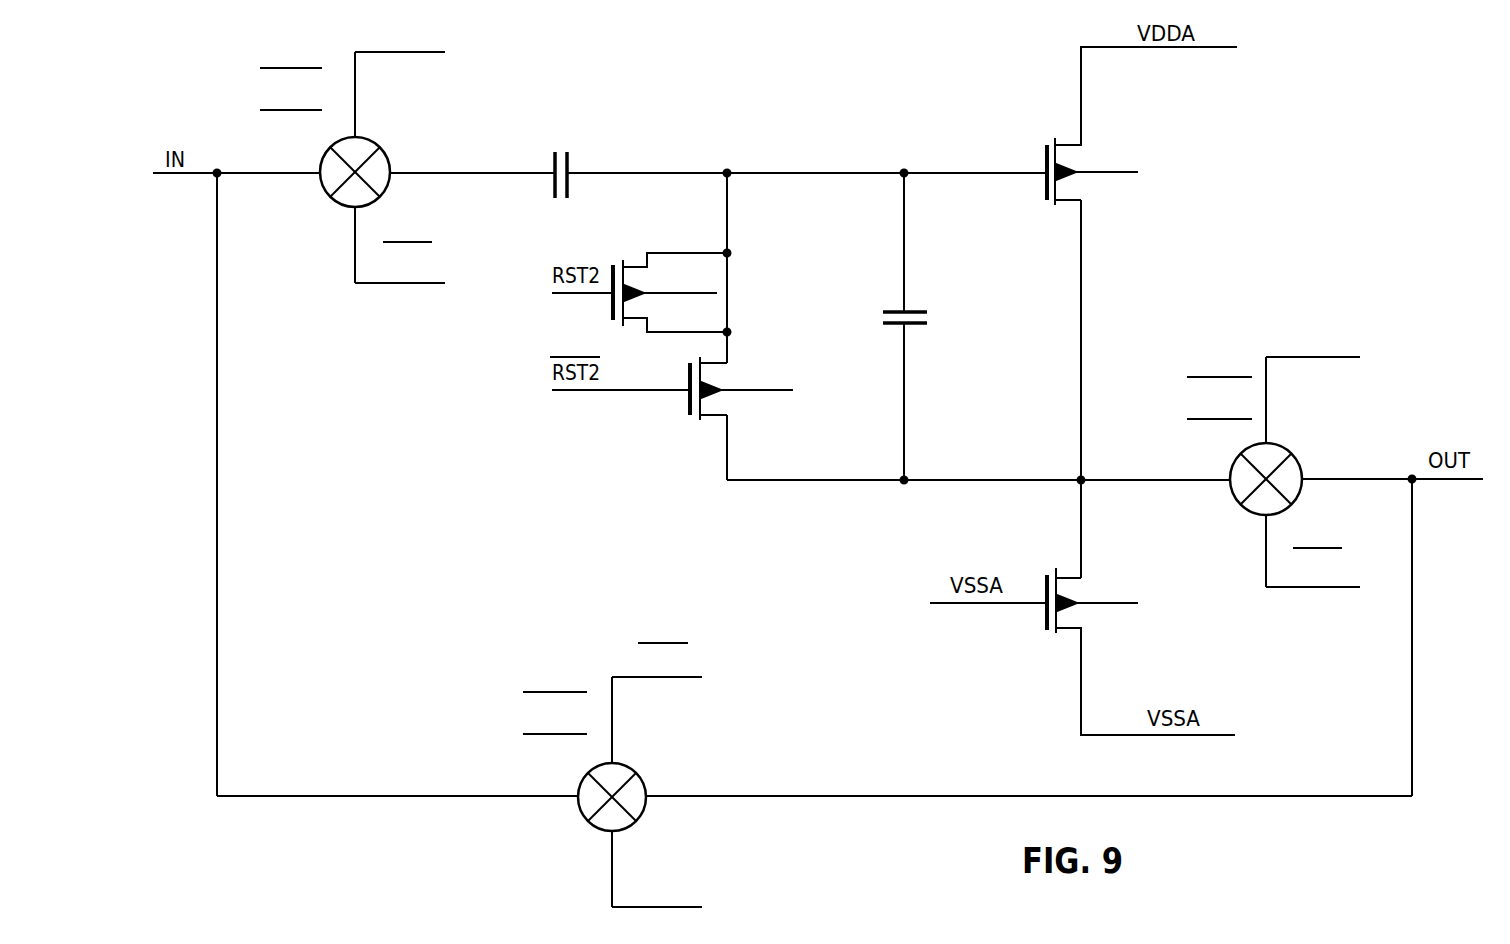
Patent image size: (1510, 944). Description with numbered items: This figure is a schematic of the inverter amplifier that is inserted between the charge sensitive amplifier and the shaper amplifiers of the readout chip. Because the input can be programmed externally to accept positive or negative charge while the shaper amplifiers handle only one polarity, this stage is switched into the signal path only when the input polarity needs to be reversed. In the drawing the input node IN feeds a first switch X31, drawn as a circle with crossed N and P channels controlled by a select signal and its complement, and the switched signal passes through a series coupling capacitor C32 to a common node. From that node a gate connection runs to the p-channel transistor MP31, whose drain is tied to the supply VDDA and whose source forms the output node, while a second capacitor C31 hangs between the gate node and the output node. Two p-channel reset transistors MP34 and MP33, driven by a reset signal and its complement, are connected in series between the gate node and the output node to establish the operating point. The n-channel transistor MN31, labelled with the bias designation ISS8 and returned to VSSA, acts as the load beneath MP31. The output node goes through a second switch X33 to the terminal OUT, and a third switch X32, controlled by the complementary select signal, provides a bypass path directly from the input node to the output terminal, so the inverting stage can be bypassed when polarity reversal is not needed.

The input transmission gate switch X31 is at (324, 153).
The feedback transmission gate switch X32 is at (583, 775).
The output transmission gate switch X33 is at (1244, 459).
The coupling capacitor 200f C32 is at (560, 173).
The storage capacitor 180F C31 is at (921, 319).
The PMOS reset transistor MP34 is at (639, 279).
The PMOS reset transistor MP33 is at (672, 404).
The PMOS amplifier transistor MP31 is at (1125, 141).
The NMOS current source transistor MN31 is at (1082, 651).
The bias current node ISS8 is at (1110, 589).